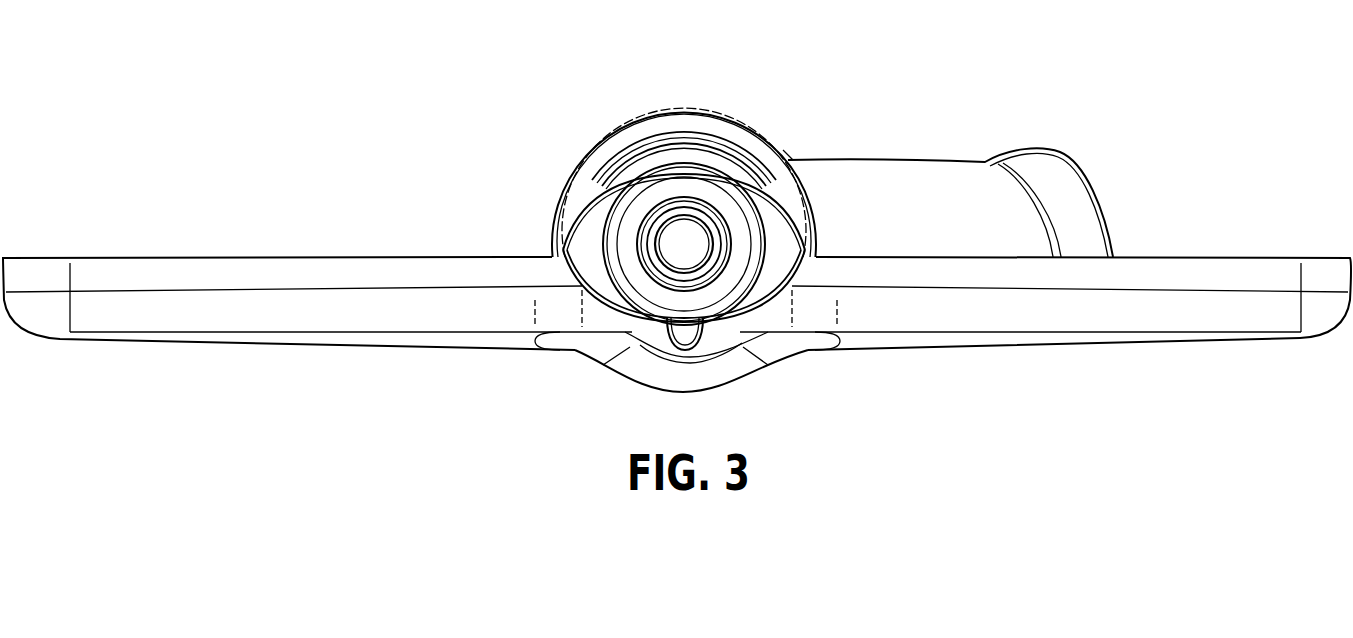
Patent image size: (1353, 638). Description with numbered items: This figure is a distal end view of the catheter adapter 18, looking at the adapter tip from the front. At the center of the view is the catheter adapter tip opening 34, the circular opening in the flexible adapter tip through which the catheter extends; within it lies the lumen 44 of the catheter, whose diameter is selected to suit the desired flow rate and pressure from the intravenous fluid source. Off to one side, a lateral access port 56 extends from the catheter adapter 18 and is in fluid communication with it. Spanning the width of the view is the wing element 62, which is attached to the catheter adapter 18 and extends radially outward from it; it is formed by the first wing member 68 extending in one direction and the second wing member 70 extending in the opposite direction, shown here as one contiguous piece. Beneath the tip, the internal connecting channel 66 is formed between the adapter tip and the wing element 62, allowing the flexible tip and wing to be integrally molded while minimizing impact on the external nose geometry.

The catheter adapter 18 is at (762, 82).
The catheter adapter tip opening 34 is at (683, 243).
The lumen 44 is at (705, 250).
The lateral access port 56 is at (1096, 180).
The wing element 62 is at (823, 385).
The internal connecting channel 66 is at (688, 343).
The first wing member 68 is at (235, 257).
The second wing member 70 is at (1198, 257).